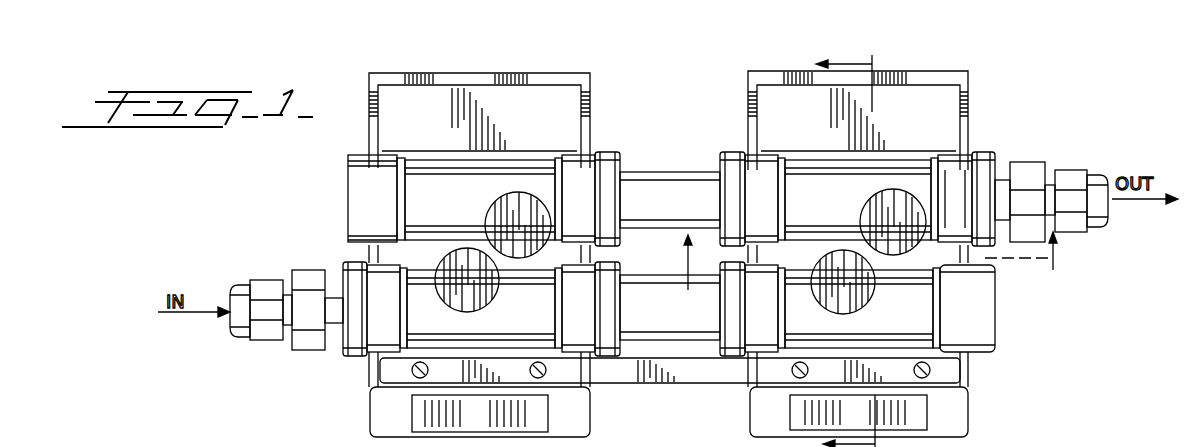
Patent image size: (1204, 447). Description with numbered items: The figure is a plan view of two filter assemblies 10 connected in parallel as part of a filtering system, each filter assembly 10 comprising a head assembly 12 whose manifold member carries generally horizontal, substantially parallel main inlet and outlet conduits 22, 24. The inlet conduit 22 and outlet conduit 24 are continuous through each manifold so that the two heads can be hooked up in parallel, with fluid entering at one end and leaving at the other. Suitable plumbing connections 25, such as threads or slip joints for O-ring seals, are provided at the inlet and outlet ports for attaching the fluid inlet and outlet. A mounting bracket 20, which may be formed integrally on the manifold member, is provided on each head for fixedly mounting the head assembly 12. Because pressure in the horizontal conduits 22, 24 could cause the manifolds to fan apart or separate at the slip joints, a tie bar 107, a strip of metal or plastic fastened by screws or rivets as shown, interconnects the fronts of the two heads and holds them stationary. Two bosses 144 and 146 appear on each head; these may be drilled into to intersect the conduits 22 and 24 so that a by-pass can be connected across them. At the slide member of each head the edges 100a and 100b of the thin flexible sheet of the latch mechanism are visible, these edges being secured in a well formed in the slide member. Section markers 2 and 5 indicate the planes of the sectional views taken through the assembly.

The filter assembly 10 is at (624, 146).
The head assembly 12 is at (982, 350).
The mounting bracket 20 is at (592, 82).
The inlet conduit 22 is at (418, 307).
The outlet conduit 24 is at (918, 185).
The plumbing connections 25 is at (983, 170).
The boss 144 is at (452, 268).
The boss 146 is at (527, 205).
The edge of flexible portion 100a is at (410, 405).
The edge of flexible portion 100b is at (548, 408).
The tie bar 107 is at (698, 375).
The section line 2 is at (870, 261).
The section line 5 is at (853, 250).